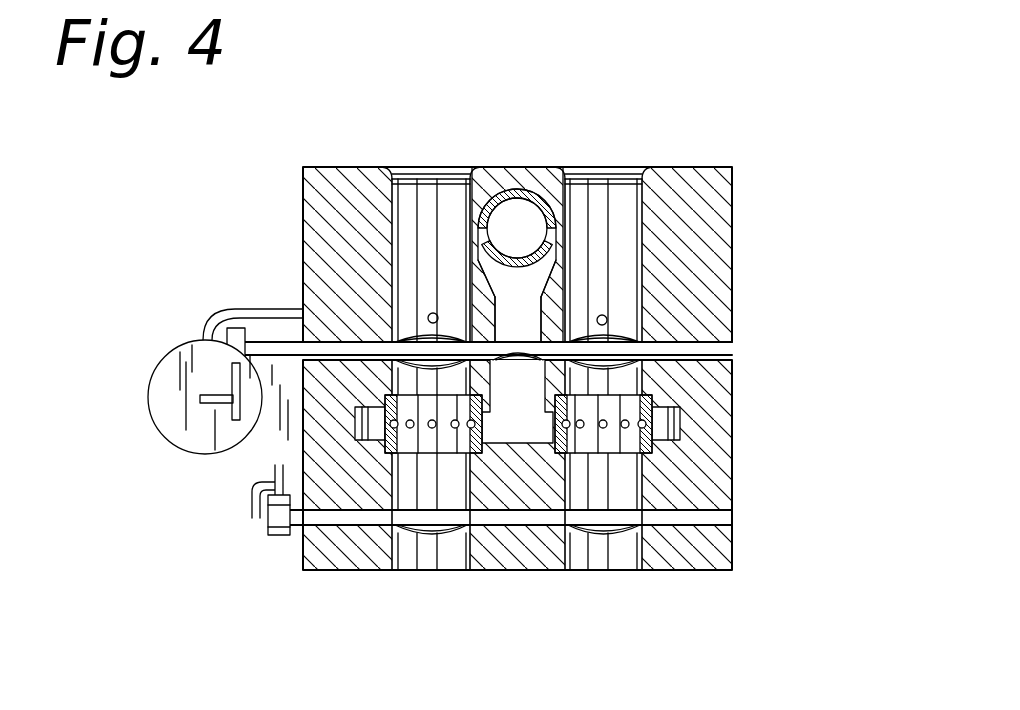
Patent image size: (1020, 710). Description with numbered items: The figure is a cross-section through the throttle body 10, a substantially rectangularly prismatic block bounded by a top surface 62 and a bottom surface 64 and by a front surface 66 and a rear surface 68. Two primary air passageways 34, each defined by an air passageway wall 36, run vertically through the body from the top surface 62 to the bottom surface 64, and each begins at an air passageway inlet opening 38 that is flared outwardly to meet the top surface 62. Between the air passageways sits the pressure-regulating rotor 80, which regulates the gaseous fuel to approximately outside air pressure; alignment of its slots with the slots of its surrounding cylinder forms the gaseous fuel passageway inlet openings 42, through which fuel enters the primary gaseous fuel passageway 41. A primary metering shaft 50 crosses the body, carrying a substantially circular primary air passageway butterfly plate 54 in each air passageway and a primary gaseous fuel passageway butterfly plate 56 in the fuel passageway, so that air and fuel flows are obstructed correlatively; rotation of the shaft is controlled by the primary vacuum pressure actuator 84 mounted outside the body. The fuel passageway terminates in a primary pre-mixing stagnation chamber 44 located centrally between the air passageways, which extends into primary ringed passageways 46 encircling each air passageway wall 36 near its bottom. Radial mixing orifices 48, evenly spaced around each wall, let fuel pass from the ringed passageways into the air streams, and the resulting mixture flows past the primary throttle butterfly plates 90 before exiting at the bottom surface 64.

The throttle body 10 is at (732, 200).
The primary air passageway 34 is at (400, 197).
The air passageway wall 36 is at (393, 228).
The air passageway inlet opening 38 is at (398, 168).
The primary gaseous fuel passageway 41 is at (525, 305).
The gaseous fuel passageway inlet opening 42 is at (478, 170).
The primary pre-mixing stagnation chamber 44 is at (535, 437).
The primary ringed passageway 46 is at (370, 427).
The radial mixing orifice 48 is at (400, 440).
The primary metering shaft 50 is at (668, 353).
The primary air passageway butterfly plate 54 is at (440, 335).
The primary gaseous fuel passageway butterfly plate 56 is at (505, 322).
The top surface 62 is at (697, 168).
The bottom surface 64 is at (716, 571).
The front surface 66 is at (303, 180).
The rear surface 68 is at (730, 488).
The pressure-regulating rotor 80 is at (512, 196).
The primary vacuum pressure actuator 84 is at (170, 447).
The primary throttle butterfly plate 90 is at (423, 528).